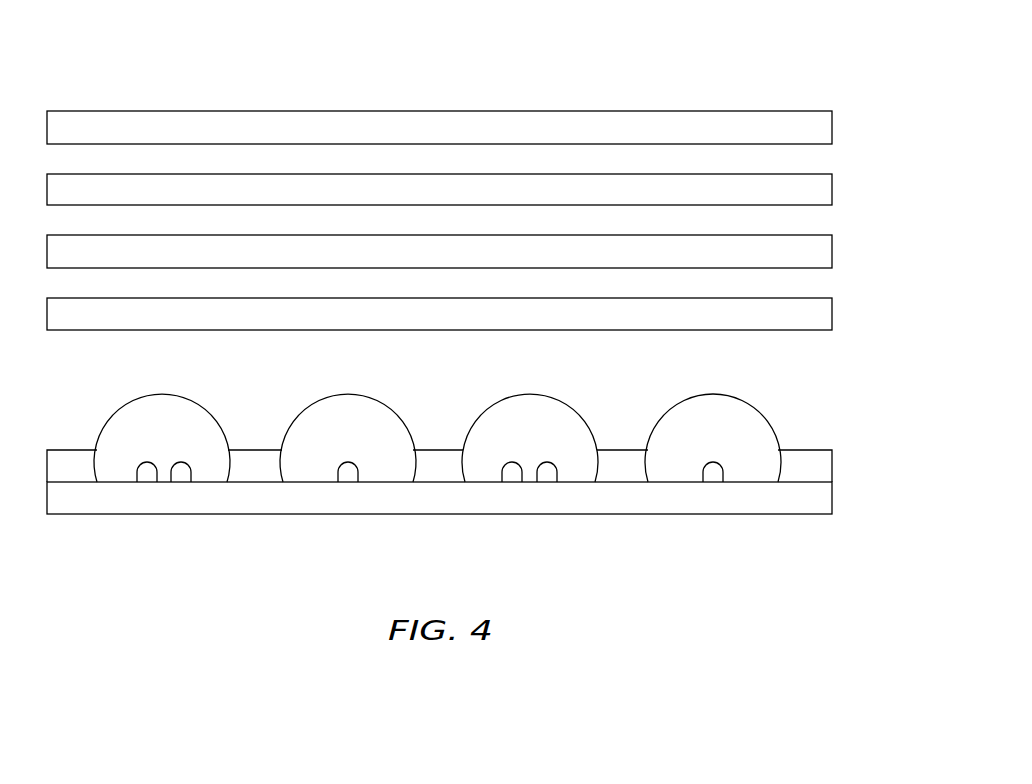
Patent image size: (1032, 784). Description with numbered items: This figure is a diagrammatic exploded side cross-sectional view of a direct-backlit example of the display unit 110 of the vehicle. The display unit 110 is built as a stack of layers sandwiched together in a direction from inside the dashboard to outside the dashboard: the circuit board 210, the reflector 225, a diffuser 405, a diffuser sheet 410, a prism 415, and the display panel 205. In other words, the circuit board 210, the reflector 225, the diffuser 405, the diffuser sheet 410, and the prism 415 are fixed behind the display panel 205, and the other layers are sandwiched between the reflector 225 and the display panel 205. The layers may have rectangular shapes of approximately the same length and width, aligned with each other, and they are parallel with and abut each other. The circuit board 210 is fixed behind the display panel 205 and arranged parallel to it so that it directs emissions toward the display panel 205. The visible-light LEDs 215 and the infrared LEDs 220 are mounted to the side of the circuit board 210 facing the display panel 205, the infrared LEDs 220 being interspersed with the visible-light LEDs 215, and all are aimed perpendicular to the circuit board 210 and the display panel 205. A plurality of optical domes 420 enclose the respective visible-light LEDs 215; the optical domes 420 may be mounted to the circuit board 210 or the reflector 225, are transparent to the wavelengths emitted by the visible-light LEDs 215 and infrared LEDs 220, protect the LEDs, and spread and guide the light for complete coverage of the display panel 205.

The display unit 110 is at (667, 82).
The display panel 205 is at (290, 111).
The prism 415 is at (832, 182).
The diffuser sheet 410 is at (832, 244).
The diffuser 405 is at (832, 306).
The reflector 225 is at (803, 450).
The circuit board 210 is at (832, 497).
The visible-light LEDs 215 is at (147, 462).
The infrared LEDs 220 is at (181, 462).
The optical domes 420 is at (286, 431).